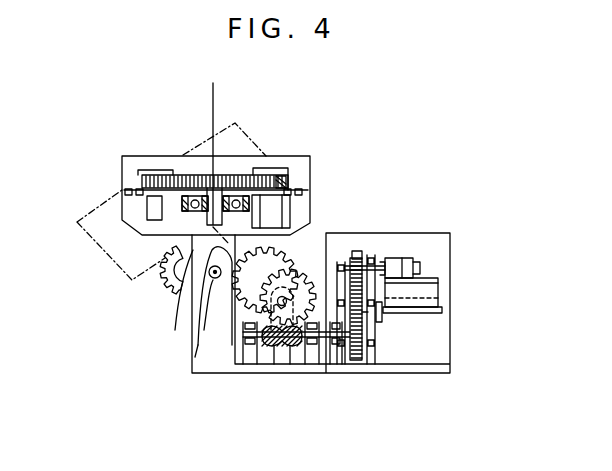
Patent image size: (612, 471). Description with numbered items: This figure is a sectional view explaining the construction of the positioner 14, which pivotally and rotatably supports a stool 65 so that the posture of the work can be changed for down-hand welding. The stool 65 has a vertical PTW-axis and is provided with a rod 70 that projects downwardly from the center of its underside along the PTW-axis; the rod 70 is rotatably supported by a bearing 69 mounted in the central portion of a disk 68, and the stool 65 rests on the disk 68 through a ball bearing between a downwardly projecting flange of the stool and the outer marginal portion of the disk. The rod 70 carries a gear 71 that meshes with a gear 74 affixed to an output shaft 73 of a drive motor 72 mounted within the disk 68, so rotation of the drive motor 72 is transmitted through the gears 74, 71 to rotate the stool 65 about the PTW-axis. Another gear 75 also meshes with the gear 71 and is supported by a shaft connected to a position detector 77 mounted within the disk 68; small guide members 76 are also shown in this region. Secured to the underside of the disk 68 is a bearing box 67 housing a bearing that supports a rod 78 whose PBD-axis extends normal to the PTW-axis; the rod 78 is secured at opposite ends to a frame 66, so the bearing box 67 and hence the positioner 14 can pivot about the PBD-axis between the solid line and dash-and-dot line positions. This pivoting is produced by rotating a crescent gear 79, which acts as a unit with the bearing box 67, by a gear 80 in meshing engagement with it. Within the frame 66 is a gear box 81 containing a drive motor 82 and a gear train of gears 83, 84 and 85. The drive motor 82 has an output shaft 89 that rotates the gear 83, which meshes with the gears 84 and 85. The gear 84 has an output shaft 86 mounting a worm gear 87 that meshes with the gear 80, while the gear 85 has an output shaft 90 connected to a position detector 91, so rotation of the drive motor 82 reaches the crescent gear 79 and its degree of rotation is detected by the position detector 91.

The positioner 14 is at (403, 205).
The stool 65 is at (310, 158).
The frame 66 is at (223, 364).
The bearing box 67 is at (180, 295).
The disk 68 is at (130, 209).
The bearing 69 is at (193, 214).
The rod 70 is at (161, 272).
The gear 71 is at (228, 178).
The drive motor 72 is at (287, 212).
The output shaft 73 is at (292, 191).
The gear 74 is at (283, 181).
The gear 75 is at (157, 174).
The guide blocks 76 is at (127, 190).
The position detector 77 is at (147, 199).
The rod 78 is at (221, 270).
The crescent gear 79 is at (195, 357).
The gear 80 is at (288, 278).
The gear box 81 is at (449, 259).
The drive motor 82 is at (430, 296).
The gear 83 is at (377, 318).
The gear 84 is at (357, 362).
The gear 85 is at (357, 254).
The output shaft 86 is at (340, 360).
The worm gear 87 is at (283, 348).
The output shaft 89 is at (358, 311).
The output shaft 90 is at (383, 270).
The position detector 91 is at (406, 267).
The PTW-axis PTW is at (216, 98).
The PBD-axis PBD is at (190, 336).